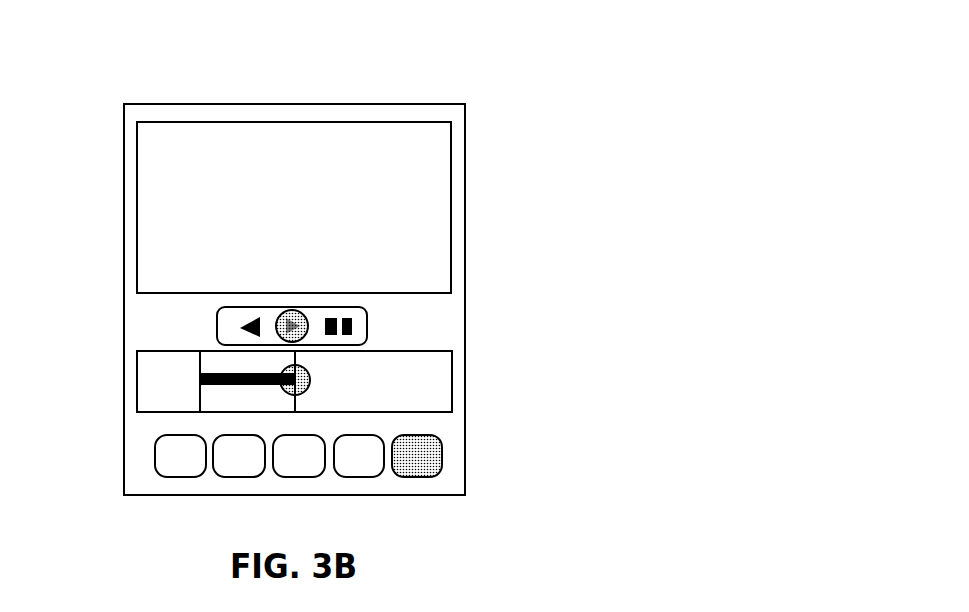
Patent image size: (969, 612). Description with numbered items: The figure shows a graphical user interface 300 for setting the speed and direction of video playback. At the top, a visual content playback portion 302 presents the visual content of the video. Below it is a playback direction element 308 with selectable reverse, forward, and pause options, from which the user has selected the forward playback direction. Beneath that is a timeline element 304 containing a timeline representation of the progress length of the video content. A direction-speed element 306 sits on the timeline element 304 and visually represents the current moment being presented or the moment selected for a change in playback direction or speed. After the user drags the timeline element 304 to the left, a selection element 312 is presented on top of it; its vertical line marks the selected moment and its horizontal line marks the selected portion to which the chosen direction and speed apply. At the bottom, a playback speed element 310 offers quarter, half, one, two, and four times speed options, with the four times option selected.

The graphical user interface 300 is at (388, 103).
The visual content playback portion 302 is at (422, 215).
The timeline element 304 is at (422, 360).
The direction-speed element 306 is at (312, 385).
The playback direction element 308 is at (358, 305).
The playback speed element 310 is at (442, 458).
The selection element 312 is at (237, 373).